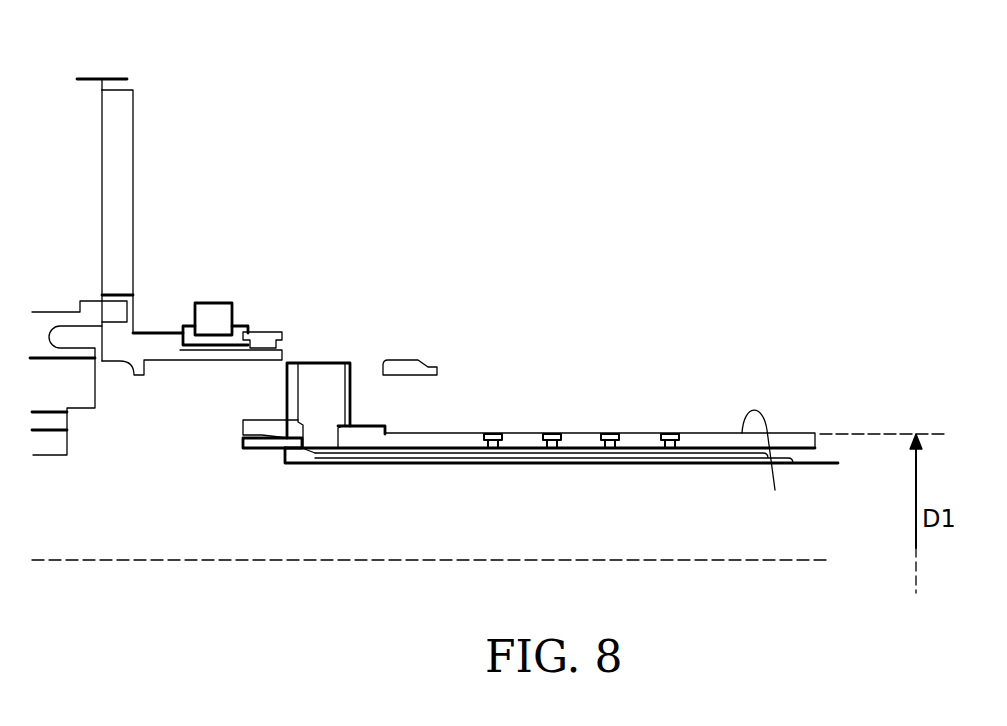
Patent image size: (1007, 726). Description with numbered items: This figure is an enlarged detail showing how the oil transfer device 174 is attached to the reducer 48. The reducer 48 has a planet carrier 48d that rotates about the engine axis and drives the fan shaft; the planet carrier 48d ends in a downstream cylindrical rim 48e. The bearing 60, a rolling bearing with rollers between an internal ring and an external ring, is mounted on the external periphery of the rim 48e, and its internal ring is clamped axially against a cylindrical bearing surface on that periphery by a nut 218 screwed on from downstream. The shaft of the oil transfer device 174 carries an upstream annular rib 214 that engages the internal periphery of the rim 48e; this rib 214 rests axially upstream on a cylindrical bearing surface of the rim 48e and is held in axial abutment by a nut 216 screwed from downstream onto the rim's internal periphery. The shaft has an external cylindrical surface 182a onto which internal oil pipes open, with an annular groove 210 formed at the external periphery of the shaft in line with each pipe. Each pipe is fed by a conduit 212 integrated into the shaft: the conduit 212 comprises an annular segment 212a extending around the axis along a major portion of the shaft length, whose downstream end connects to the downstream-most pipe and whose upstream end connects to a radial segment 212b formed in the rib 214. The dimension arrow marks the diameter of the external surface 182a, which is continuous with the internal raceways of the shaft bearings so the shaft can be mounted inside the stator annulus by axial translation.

The reducer 48 is at (151, 106).
The planet carrier 48d is at (122, 200).
The downstream cylindrical rim 48e is at (178, 349).
The bearing 60 is at (205, 284).
The nut 218 is at (263, 335).
The nut 216 is at (402, 364).
The upstream annular rib 214 is at (347, 392).
The conduit 212 is at (428, 450).
The annular segment 212a is at (554, 498).
The radial segment 212b is at (313, 377).
The annular groove 210 is at (491, 433).
The oil transfer device 174 is at (708, 414).
The external cylindrical surface 182a is at (613, 450).